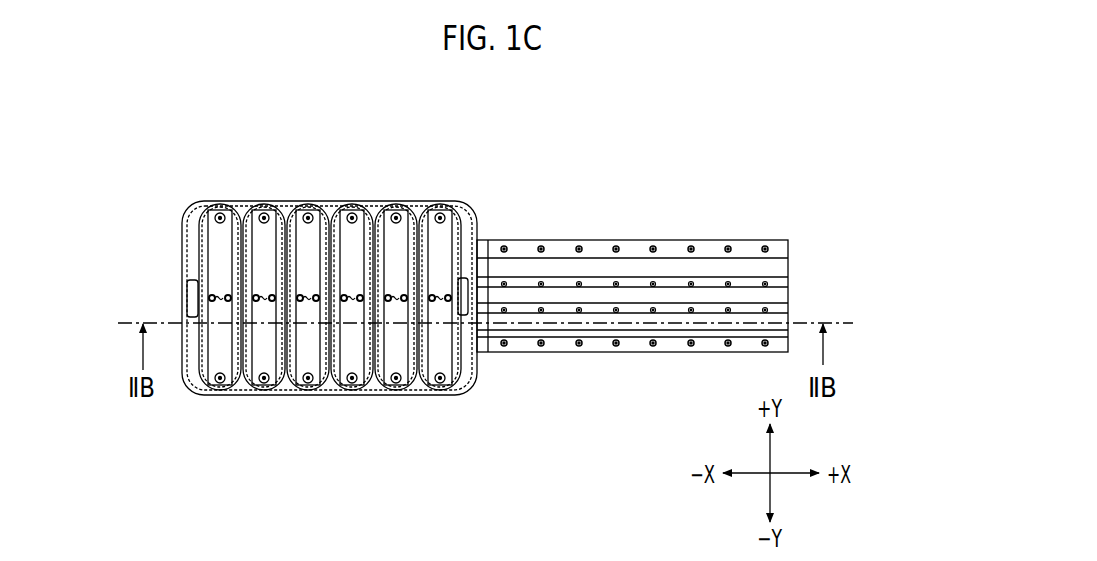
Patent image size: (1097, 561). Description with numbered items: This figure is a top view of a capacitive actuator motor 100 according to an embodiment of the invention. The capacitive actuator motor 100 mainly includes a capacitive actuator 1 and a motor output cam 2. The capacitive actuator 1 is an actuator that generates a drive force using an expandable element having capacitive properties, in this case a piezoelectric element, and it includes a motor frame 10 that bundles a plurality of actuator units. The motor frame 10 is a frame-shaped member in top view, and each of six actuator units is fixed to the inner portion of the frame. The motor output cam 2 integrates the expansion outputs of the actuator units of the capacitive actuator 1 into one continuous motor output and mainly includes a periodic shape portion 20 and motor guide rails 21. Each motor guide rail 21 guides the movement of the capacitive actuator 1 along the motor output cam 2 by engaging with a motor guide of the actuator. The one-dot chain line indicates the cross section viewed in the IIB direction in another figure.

The capacitive actuator 1 is at (486, 197).
The motor output cam 2 is at (721, 236).
The motor frame 10 is at (186, 380).
The periodic shape portion 20 is at (777, 295).
The motor guide rail 21 is at (563, 240).
The capacitive actuator motor 100 is at (642, 214).